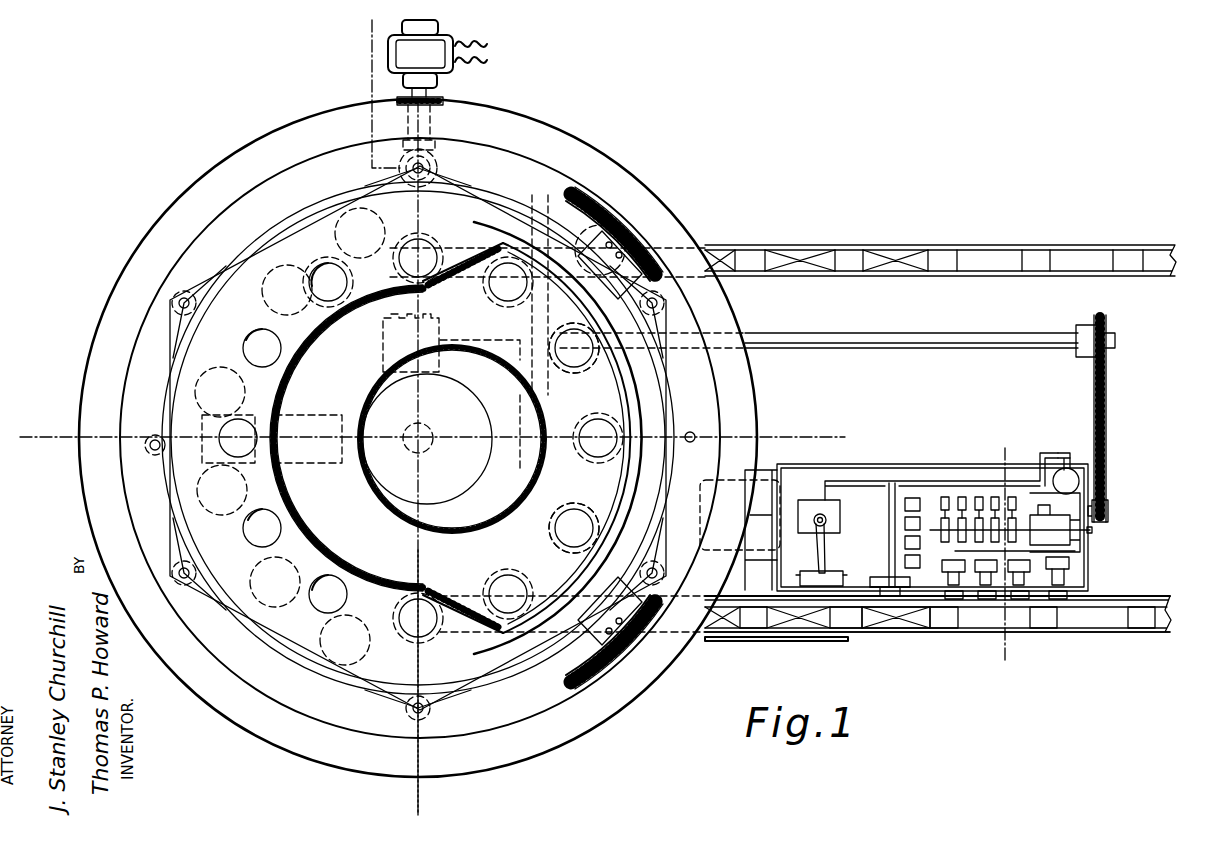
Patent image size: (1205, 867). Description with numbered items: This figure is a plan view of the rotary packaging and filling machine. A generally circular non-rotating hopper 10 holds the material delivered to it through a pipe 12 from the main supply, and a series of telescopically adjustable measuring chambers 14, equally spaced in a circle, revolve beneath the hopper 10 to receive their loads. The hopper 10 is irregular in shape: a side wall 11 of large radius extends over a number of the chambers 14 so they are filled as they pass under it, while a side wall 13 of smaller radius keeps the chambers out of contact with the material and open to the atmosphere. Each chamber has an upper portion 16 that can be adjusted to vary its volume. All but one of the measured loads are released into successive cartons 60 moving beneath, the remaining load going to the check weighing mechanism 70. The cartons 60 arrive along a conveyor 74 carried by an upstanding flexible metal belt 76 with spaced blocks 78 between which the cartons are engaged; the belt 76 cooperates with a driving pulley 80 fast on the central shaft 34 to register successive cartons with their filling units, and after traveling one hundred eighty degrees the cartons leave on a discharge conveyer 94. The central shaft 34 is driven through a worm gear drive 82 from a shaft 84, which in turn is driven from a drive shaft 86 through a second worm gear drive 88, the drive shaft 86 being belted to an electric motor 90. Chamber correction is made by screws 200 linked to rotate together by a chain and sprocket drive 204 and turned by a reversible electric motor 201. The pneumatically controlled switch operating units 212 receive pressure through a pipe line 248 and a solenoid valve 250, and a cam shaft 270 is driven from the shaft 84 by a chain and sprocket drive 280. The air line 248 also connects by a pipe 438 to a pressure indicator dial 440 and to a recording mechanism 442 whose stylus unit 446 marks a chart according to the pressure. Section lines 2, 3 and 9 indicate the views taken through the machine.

The section line 2- 2 is at (45, 420).
The section line 3- 3 is at (442, 559).
The section line 9- 9 is at (385, 28).
The hopper 10 is at (476, 243).
The side wall 11 is at (632, 402).
The pipe 12 is at (393, 506).
The side wall 13 is at (280, 502).
The measuring chambers 14 is at (421, 438).
The upper portion 16 is at (1030, 452).
The central shaft 34 is at (428, 447).
The cartons 60 is at (912, 634).
The check weighing mechanism 70 is at (290, 414).
The conveyor 74 is at (1088, 636).
The flexible metal belt 76 is at (1100, 597).
The blocks 78 is at (856, 620).
The driving pulley 80 is at (581, 510).
The worm gear drive 82 is at (383, 352).
The shaft 84 is at (778, 333).
The drive shaft 86 is at (533, 504).
The second worm gear drive 88 is at (566, 383).
The electric motor 90 is at (771, 473).
The discharge conveyer 94 is at (821, 238).
The screws 200 is at (430, 167).
The reversible electric motor 201 is at (388, 57).
The chain and sprocket drive 204 is at (226, 272).
The pneumatically controlled switch operating units 212 is at (1082, 572).
The pipe line 248 is at (1069, 457).
The solenoid valve 250 is at (1085, 481).
The cam shaft 270 is at (1092, 530).
The chain and sprocket drive 280 is at (1110, 440).
The pipe 438 is at (903, 485).
The pressure indicator dial 440 is at (896, 607).
The recording mechanism 442 is at (825, 578).
The stylus unit 446 is at (824, 546).